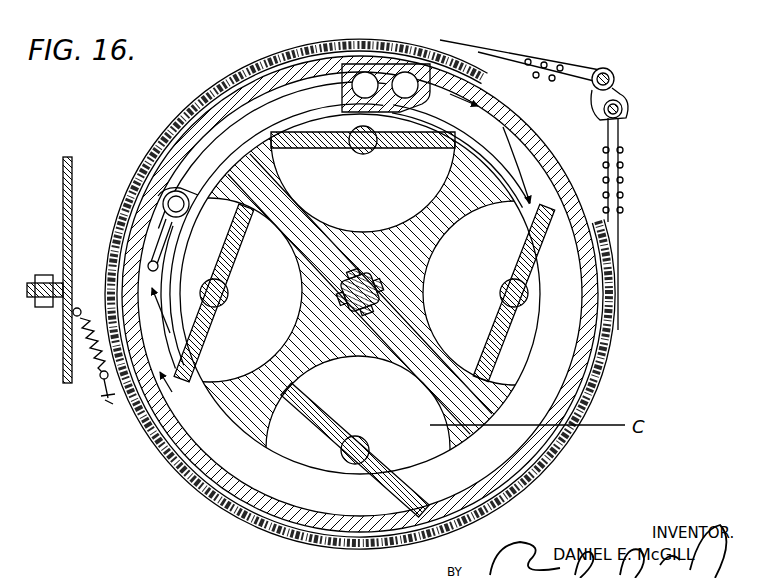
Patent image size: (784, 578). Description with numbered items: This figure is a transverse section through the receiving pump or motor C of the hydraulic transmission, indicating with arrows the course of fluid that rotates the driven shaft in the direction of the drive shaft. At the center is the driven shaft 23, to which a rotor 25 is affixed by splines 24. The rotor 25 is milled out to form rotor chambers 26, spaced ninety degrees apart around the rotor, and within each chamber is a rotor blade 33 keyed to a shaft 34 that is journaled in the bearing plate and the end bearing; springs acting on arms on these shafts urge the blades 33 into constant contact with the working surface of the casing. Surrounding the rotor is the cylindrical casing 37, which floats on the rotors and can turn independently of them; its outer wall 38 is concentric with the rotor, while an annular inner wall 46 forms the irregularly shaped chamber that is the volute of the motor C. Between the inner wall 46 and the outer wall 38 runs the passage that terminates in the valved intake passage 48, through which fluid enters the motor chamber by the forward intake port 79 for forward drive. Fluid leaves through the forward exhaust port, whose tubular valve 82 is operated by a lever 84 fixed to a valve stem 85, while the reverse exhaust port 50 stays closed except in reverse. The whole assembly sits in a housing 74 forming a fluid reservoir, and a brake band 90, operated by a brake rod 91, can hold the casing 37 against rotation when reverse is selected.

The driven shaft 23 is at (375, 286).
The splines 24 is at (386, 294).
The rotor 25 is at (412, 334).
The rotor chambers 26 is at (362, 294).
The rotor blade 33 is at (405, 150).
The shaft 34 is at (356, 152).
The cylindrical casing 37 is at (205, 486).
The outer wall 38 is at (550, 171).
The annular inner wall 46 is at (268, 130).
The valved intake passage 48 is at (345, 86).
The reverse exhaust port 50 is at (420, 90).
The housing 74 is at (62, 342).
The forward intake port 79 is at (368, 80).
The tubular valve 82 is at (186, 190).
The lever 84 is at (162, 238).
The valve stem 85 is at (147, 267).
The brake band 90 is at (618, 296).
The brake rod 91 is at (623, 111).